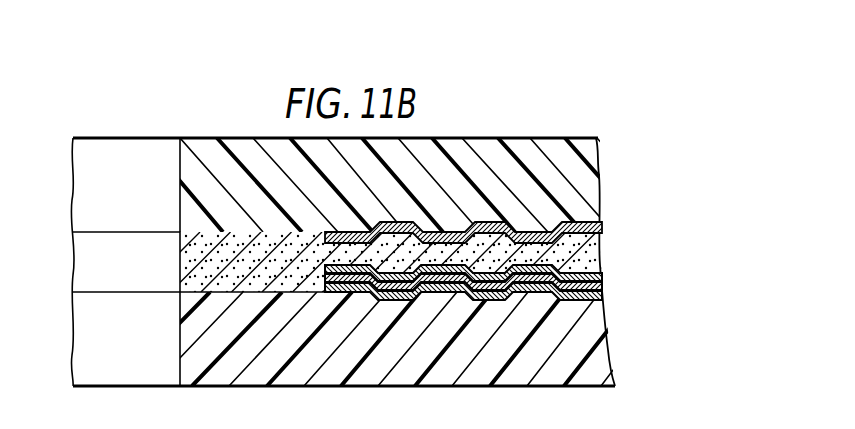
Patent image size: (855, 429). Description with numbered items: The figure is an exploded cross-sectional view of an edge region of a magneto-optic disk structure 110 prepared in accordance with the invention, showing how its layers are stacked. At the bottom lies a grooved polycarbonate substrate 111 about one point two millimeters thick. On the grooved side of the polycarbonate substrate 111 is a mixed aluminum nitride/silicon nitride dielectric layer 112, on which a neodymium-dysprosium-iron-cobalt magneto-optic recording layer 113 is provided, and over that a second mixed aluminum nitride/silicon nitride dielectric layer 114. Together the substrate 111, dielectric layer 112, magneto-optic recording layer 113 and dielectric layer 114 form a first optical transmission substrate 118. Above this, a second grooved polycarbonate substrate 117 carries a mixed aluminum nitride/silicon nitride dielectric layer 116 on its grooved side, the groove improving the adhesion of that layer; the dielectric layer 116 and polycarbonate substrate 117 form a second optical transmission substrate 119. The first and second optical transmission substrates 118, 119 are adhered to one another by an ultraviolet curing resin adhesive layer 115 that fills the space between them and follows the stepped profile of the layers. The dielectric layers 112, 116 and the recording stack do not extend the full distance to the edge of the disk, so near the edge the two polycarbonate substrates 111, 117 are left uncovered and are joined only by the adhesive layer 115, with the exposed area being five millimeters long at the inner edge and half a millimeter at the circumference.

The structure 110 is at (685, 136).
The polycarbonate substrate 111 is at (585, 332).
The mixed aluminum nitride/silicon nitride dielectric layer 112 is at (598, 296).
The magneto-optic recording layer 113 is at (598, 284).
The second mixed aluminum nitride/silicon nitride dielectric layer 114 is at (598, 272).
The ultraviolet curing resin adhesive layer 115 is at (592, 248).
The mixed aluminum nitride/silicon nitride dielectric layer 116 is at (596, 230).
The polycarbonate substrate 117 is at (583, 187).
The first optical transmission substrate 118 is at (650, 266).
The second optical transmission substrate 119 is at (645, 172).